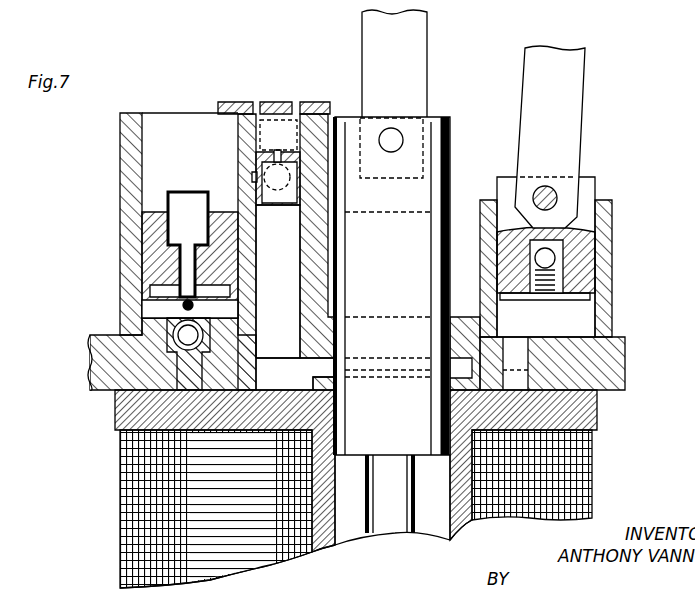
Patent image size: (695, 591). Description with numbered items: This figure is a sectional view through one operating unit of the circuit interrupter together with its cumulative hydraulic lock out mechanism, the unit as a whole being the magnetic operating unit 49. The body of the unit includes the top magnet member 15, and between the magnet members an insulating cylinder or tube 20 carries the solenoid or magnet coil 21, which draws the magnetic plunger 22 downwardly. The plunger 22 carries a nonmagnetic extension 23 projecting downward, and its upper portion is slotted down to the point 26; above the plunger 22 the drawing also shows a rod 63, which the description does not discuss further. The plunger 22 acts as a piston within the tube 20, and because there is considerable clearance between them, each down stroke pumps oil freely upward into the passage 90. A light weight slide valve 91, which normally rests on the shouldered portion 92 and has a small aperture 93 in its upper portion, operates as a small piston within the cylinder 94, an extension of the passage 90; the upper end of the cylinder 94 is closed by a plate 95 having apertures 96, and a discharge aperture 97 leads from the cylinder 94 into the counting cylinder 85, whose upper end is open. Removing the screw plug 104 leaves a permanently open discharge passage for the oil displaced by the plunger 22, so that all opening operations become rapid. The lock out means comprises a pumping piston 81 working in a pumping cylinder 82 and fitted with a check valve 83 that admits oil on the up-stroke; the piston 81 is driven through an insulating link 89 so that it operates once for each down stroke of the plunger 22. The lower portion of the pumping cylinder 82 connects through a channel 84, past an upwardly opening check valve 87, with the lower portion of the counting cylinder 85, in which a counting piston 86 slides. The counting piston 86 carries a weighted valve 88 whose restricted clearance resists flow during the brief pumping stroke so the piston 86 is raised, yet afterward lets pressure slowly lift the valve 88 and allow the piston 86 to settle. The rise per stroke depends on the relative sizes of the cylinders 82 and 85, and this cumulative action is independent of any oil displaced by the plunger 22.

The top magnet member 15 is at (102, 372).
The cylinder or tube 20 is at (336, 546).
The solenoid or magnet coil 21 is at (118, 525).
The magnetic plunger 22 is at (452, 128).
The nonmagnetic extension 23 is at (395, 513).
The slot end point 26 is at (440, 200).
The magnetic operating unit 49 is at (597, 475).
The upper rod 63 is at (412, 38).
The pumping piston 81 is at (580, 240).
The pumping cylinder 82 is at (600, 296).
The check valve 83 is at (558, 265).
The channel 84 is at (270, 370).
The counting cylinder 85 is at (121, 213).
The counting piston 86 is at (155, 212).
The check valve 87 is at (172, 333).
The weighted valve 88 is at (180, 198).
The insulating link 89 is at (578, 108).
The passage 90 is at (296, 262).
The slide valve 91 is at (280, 208).
The shouldered portion 92 is at (262, 217).
The aperture 93 is at (278, 152).
The cylinder or passage 94 is at (246, 128).
The plate 95 is at (283, 102).
The apertures 96 is at (258, 102).
The discharge aperture 97 is at (252, 178).
The screw plug 104 is at (300, 190).